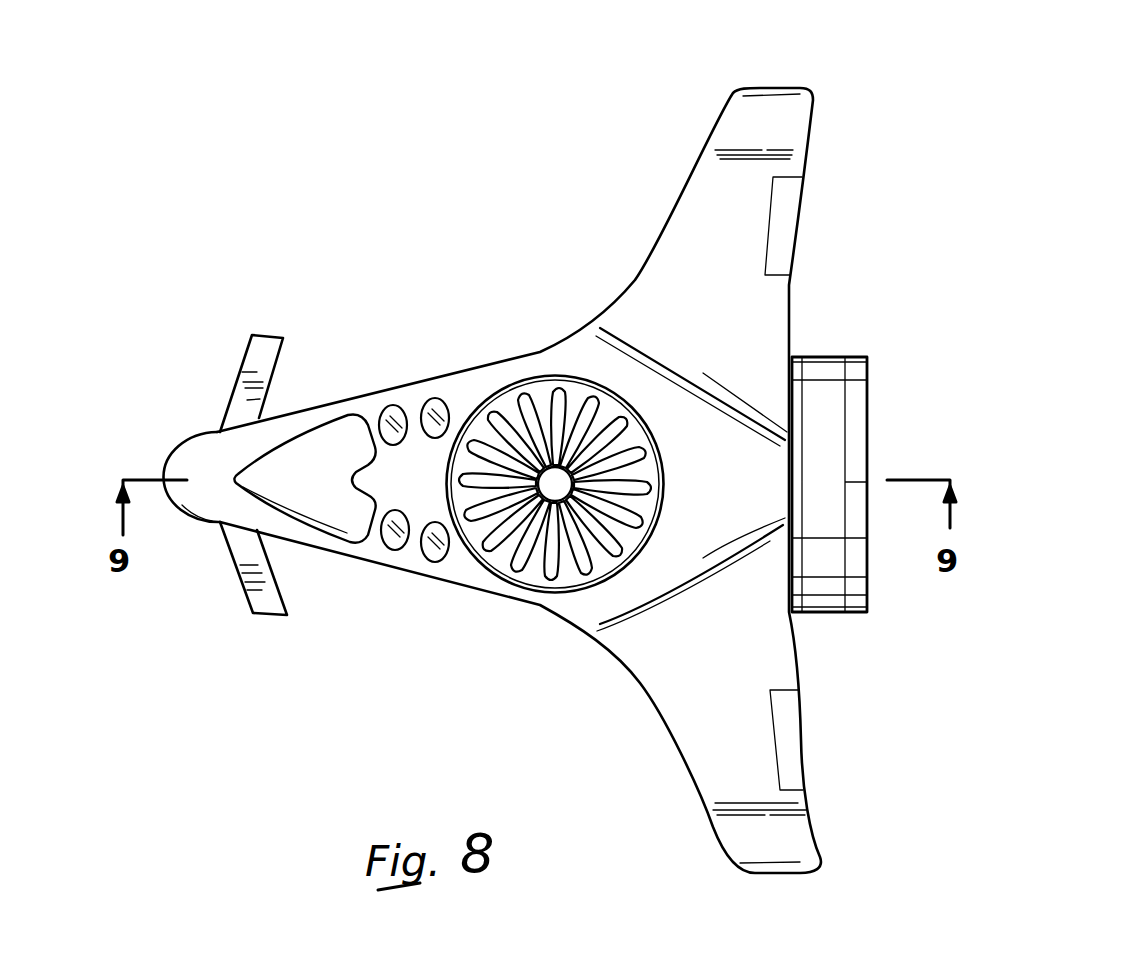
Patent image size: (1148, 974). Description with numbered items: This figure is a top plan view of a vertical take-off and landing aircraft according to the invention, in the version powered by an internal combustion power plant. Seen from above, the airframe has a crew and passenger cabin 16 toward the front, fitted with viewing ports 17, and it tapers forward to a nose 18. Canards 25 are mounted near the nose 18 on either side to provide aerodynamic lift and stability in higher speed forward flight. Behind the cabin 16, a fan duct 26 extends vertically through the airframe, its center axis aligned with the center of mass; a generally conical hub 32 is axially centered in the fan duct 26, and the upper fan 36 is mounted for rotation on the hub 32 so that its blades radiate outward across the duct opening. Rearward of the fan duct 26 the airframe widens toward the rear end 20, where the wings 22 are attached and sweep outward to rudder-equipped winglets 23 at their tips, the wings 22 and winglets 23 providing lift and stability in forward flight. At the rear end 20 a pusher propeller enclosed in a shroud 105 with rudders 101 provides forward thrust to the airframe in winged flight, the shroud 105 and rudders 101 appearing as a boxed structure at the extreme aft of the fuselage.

The crew and passenger cabin 16 is at (335, 510).
The viewing ports 17 is at (425, 402).
The nose 18 is at (165, 472).
The rear end 20 is at (780, 490).
The wings 22 is at (648, 287).
The winglets 23 is at (787, 128).
The canards 25 is at (240, 388).
The fan duct 26 is at (494, 562).
The hub 32 is at (556, 493).
The upper fan 36 is at (558, 393).
The rudders 101 is at (868, 425).
The shroud 105 is at (835, 613).